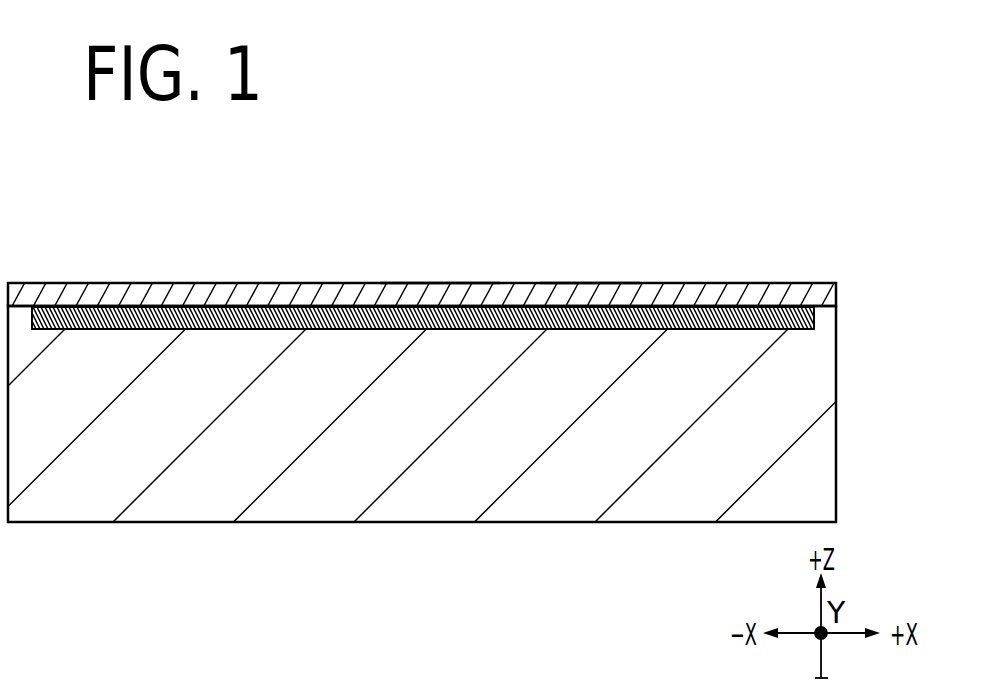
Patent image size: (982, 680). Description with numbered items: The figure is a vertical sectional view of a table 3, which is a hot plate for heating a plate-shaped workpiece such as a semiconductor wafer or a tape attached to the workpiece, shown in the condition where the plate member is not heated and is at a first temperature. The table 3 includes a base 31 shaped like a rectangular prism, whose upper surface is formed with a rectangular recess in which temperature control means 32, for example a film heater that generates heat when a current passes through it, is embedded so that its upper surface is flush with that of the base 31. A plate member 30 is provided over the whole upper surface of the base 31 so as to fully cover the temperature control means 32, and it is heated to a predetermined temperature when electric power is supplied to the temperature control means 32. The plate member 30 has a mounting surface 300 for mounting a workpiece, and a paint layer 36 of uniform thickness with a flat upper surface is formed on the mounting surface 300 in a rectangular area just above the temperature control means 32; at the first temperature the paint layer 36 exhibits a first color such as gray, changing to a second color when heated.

The table 3 is at (468, 383).
The plate member 30 is at (680, 283).
The mounting surface 300 is at (415, 283).
The base 31 is at (670, 495).
The temperature control means 32 is at (497, 319).
The paint layer 36 is at (573, 283).